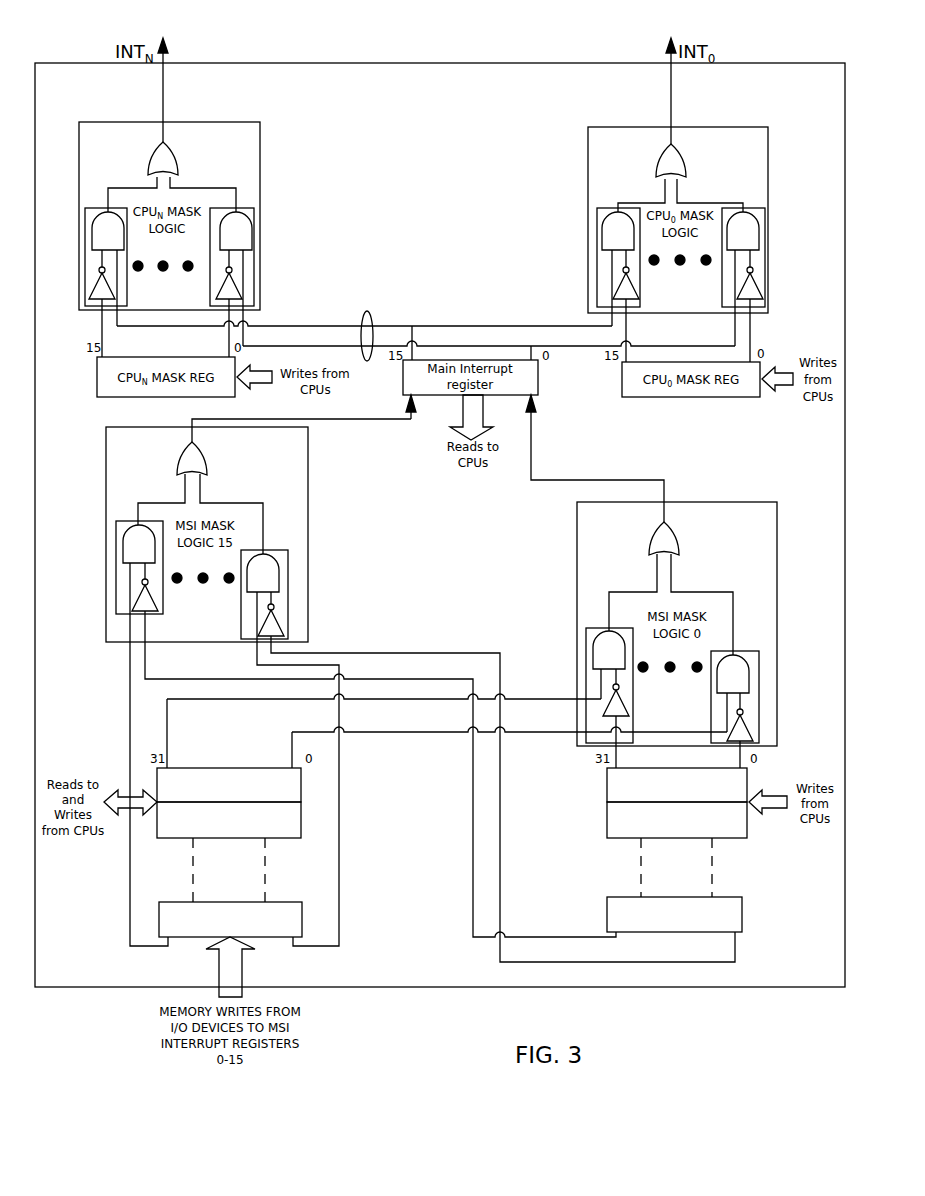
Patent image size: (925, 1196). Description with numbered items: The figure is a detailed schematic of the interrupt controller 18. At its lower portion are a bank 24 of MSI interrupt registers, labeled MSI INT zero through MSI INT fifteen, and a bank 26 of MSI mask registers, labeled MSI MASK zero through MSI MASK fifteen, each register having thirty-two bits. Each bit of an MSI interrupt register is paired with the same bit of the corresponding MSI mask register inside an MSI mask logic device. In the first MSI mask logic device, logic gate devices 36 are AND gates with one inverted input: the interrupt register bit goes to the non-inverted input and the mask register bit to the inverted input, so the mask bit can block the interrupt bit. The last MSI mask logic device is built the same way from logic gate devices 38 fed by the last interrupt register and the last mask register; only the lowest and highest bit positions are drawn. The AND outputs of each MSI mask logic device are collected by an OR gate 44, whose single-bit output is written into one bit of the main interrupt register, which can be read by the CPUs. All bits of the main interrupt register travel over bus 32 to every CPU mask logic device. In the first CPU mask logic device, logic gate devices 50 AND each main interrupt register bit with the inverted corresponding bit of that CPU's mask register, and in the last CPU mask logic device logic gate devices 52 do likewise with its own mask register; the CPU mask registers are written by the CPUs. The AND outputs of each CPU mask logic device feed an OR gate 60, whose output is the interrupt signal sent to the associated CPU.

The interrupt controller 18 is at (399, 63).
The bank of MSI interrupt registers 24 is at (98, 881).
The bank of MSI mask registers 26 is at (768, 870).
The bus 32 is at (367, 312).
The logic gate device 36 is at (586, 642).
The logic gate device 38 is at (116, 540).
The OR gate 44 is at (208, 468).
The logic gate device 50 is at (597, 263).
The logic gate device 52 is at (95, 208).
The OR gate 60 is at (180, 172).